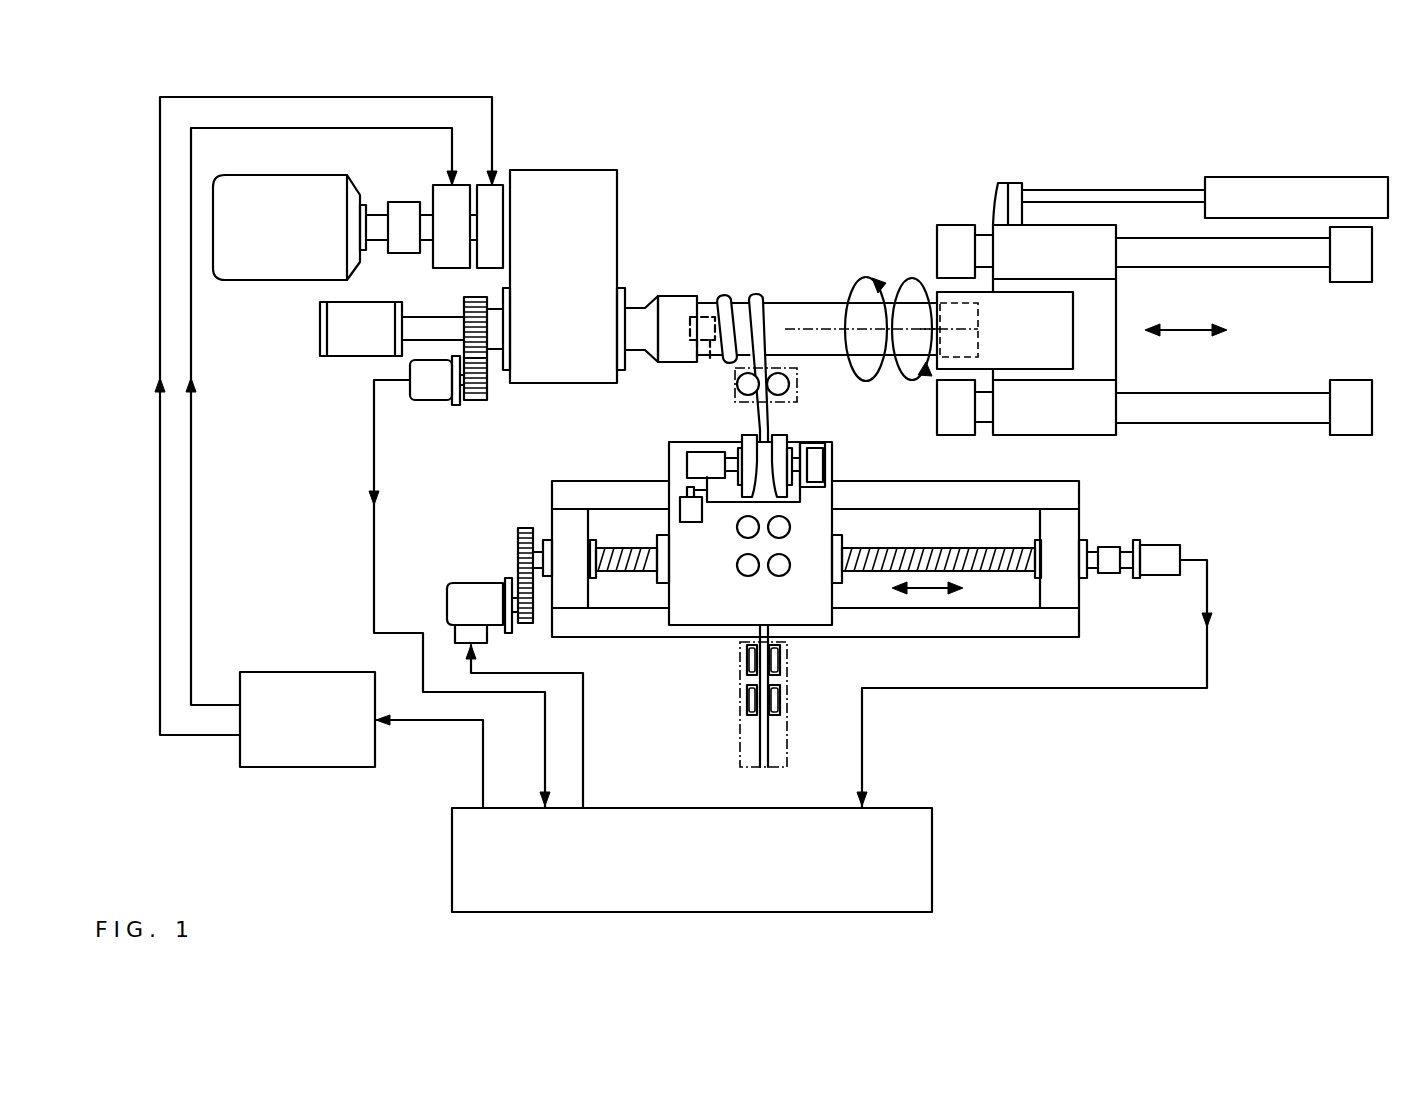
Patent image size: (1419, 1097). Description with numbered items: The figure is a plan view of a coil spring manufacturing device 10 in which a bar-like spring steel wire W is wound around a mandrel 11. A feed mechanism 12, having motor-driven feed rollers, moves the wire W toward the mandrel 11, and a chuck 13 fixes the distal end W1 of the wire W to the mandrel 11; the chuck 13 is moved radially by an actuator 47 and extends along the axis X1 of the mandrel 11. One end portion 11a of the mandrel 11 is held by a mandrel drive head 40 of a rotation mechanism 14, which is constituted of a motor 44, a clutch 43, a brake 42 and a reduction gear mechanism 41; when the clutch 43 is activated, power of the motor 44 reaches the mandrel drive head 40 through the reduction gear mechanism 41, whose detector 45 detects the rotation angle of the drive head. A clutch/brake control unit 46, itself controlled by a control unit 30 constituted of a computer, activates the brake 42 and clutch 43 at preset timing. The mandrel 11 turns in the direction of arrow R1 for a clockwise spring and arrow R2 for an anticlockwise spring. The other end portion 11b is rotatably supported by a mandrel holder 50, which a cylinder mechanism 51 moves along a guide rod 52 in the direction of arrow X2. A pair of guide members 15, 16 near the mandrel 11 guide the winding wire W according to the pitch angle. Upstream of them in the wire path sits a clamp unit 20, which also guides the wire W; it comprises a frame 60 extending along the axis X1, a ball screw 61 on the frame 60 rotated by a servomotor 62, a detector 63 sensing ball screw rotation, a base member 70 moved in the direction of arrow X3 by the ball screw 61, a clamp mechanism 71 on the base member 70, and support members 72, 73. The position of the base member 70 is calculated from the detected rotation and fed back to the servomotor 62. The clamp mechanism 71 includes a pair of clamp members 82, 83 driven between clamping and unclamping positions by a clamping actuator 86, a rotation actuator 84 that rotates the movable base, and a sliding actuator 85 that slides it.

The coil spring manufacturing device 10 is at (952, 126).
The rotation mechanism 14 is at (583, 133).
The clamp unit 20 is at (850, 460).
The motor 44 is at (300, 175).
The clutch 43 is at (442, 203).
The brake 42 is at (497, 195).
The reduction gear mechanism 41 is at (612, 187).
The actuator 47 is at (343, 356).
The detector 45 is at (430, 400).
The clutch/brake control unit 46 is at (305, 672).
The mandrel drive head 40 is at (667, 296).
The mandrel 11 is at (818, 303).
The chuck 13 is at (700, 315).
The distal end W1 is at (686, 333).
The end portion 11a is at (720, 302).
The wire W is at (762, 328).
The axis X1 is at (792, 326).
The arrow R1 is at (853, 285).
The arrow R2 is at (900, 285).
The guide member 15 is at (736, 384).
The guide member 16 is at (789, 384).
The mandrel holder 50 is at (1060, 306).
The end portion 11b is at (978, 335).
The cylinder mechanism 51 is at (1265, 180).
The guide rod 52 is at (1283, 266).
The arrow X2 is at (1185, 333).
The frame 60 is at (975, 482).
The ball screw 61 is at (965, 547).
The arrow X3 is at (925, 595).
The servomotor 62 is at (495, 583).
The detector 63 is at (1160, 545).
The base member 70 is at (835, 521).
The clamping actuator 86 is at (688, 463).
The clamp member 82 is at (752, 435).
The clamp member 83 is at (772, 435).
The sliding actuator 85 is at (820, 440).
The rotation actuator 84 is at (688, 522).
The clamp mechanism 71 is at (732, 490).
The support member 72 is at (742, 572).
The support member 73 is at (785, 573).
The feed mechanism 12 is at (788, 727).
The control unit 30 is at (686, 808).